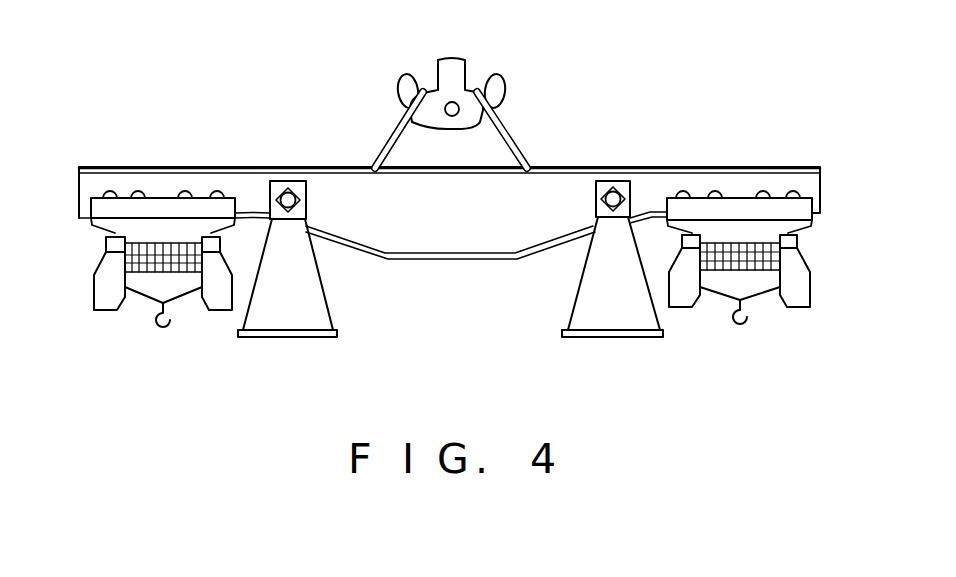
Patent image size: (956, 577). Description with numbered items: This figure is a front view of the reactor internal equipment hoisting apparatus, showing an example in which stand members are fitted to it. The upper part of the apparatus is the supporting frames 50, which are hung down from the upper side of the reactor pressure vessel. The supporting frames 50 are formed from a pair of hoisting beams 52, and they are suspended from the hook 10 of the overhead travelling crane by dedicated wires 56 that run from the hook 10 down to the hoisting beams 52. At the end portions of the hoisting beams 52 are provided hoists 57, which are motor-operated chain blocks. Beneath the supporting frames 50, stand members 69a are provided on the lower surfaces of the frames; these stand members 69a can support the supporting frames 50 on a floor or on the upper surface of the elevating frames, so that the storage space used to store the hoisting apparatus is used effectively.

The hook 10 is at (453, 77).
The supporting frames 50 is at (663, 168).
The hoisting beams 52 is at (253, 167).
The dedicated wires 56 is at (517, 137).
The hoists 57 is at (95, 292).
The stand member 69a is at (312, 297).